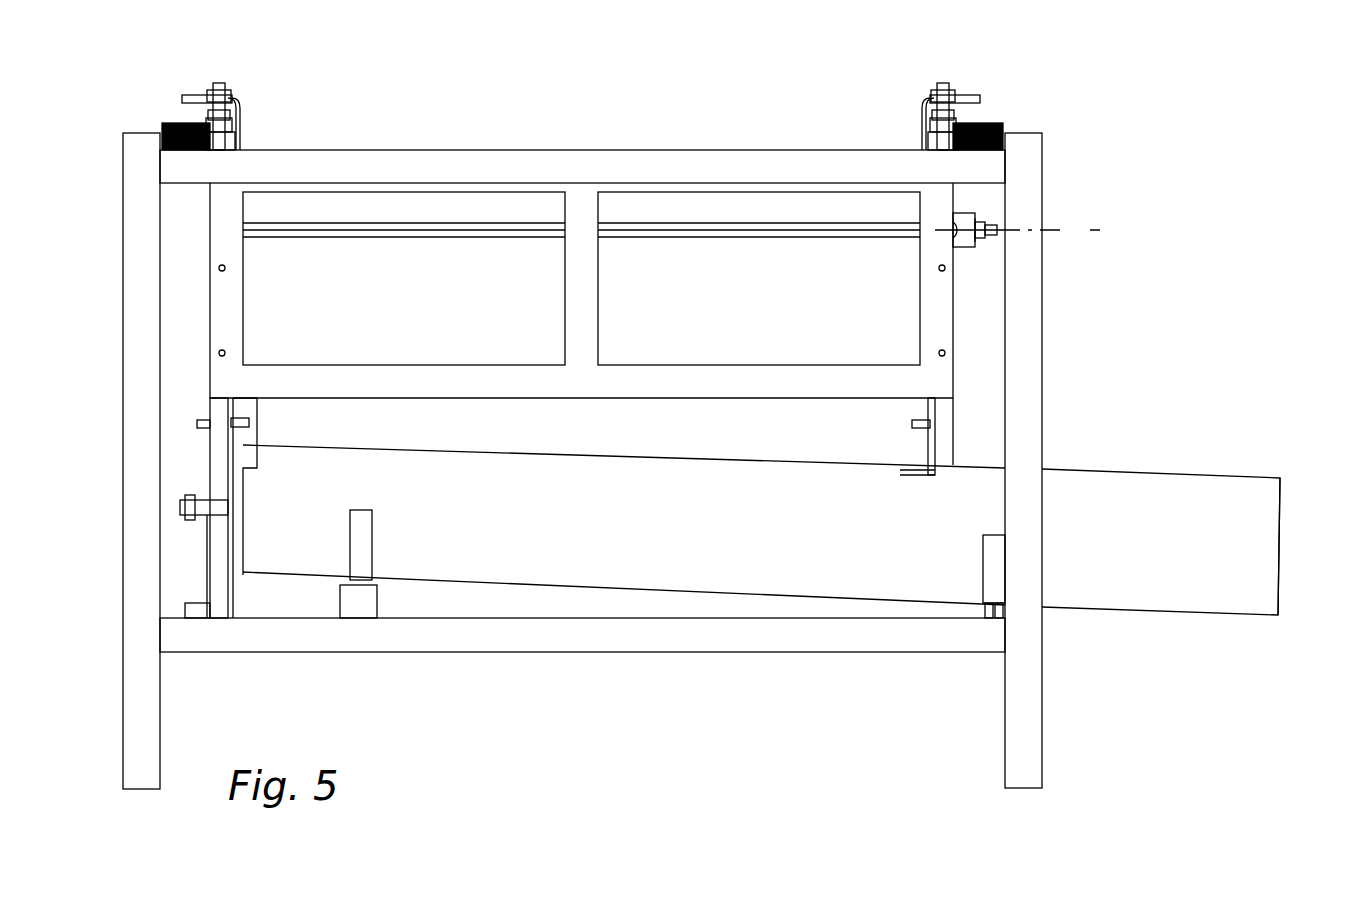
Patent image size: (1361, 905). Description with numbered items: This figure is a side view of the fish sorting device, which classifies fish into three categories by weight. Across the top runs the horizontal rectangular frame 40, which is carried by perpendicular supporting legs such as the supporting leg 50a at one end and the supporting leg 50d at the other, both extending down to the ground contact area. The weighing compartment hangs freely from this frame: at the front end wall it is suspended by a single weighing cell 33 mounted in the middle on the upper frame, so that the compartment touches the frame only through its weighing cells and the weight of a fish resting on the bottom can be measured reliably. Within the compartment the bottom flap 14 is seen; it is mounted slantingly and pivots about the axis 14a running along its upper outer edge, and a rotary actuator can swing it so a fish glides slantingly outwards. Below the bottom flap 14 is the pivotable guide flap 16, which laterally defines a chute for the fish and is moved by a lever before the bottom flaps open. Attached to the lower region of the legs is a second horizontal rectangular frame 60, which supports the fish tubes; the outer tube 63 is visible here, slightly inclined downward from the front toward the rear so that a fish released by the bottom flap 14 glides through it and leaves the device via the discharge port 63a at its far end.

The bottom flap 14 is at (468, 317).
The axis 14a is at (1062, 230).
The guide flap 16 is at (552, 445).
The weighing cell 33 is at (182, 122).
The frame 40 is at (568, 160).
The supporting leg 50a is at (138, 366).
The supporting leg 50d is at (1030, 386).
The frame 60 is at (605, 638).
The tube 63 is at (694, 552).
The discharge port 63a is at (1283, 548).